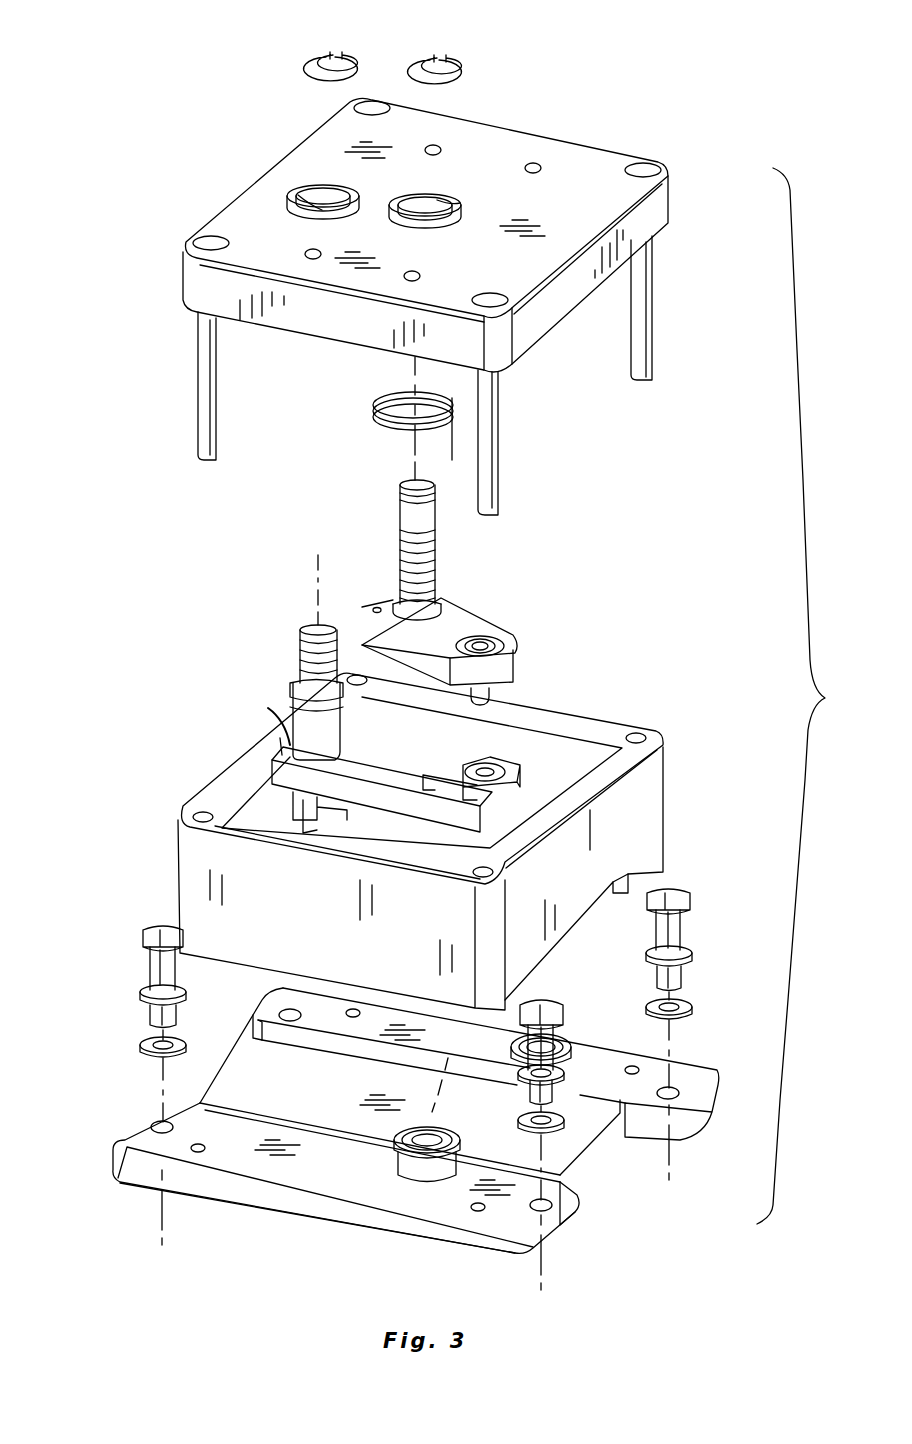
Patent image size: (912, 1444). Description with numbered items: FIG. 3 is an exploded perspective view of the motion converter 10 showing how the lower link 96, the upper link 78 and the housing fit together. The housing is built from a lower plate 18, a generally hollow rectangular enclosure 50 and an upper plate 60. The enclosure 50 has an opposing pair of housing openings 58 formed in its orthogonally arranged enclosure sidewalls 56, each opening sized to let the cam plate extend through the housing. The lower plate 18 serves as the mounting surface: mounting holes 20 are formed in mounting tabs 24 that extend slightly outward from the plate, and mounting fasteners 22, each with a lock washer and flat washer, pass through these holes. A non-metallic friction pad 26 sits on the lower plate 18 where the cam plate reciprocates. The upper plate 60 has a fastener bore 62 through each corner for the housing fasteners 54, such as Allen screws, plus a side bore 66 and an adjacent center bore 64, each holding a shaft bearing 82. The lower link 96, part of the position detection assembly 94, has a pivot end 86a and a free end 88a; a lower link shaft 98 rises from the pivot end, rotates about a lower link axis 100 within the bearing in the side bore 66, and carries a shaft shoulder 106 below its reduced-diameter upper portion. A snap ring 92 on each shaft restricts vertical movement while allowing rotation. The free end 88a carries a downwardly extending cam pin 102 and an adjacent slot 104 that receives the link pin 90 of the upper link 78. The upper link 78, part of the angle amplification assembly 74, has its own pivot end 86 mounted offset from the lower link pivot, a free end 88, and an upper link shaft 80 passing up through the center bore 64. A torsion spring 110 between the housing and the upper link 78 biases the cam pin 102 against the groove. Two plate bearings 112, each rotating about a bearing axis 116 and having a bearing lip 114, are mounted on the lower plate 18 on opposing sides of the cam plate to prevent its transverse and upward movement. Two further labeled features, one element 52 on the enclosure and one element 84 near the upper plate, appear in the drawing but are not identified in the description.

The motion converter 10 is at (808, 696).
The lower plate 18 is at (720, 1075).
The mounting holes 20 is at (290, 1010).
The mounting fasteners 22 is at (140, 932).
The mounting tabs 24 is at (135, 1140).
The friction pad 26 is at (319, 1088).
The hollow enclosure 50 is at (668, 787).
The housing holes 52 is at (637, 732).
The housing fasteners 54 is at (196, 440).
The enclosure sidewalls 56 is at (414, 815).
The housing openings 58 is at (575, 930).
The upper plate 60 is at (673, 196).
The fastener bore 62 is at (368, 100).
The center bore 64 is at (440, 200).
The side bore 66 is at (313, 190).
The angle amplification assembly 74 is at (380, 606).
The upper link 78 is at (500, 610).
The upper link shaft 80 is at (400, 512).
The shaft bearing 82 is at (300, 197).
The axis 84 is at (410, 378).
The pivot end 86 is at (440, 590).
The pivot end 86a is at (259, 714).
The free end 88 is at (520, 650).
The free end 88a is at (505, 770).
The link pin 90 is at (492, 695).
The snap ring 92 is at (312, 56).
The position detection assembly 94 is at (300, 742).
The lower link 96 is at (382, 789).
The lower link shaft 98 is at (298, 630).
The lower link axis 100 is at (312, 560).
The cam pin 102 is at (480, 838).
The slot 104 is at (520, 790).
The shaft shoulder 106 is at (303, 745).
The spring 110 is at (380, 425).
The plate bearings 112 is at (565, 1070).
The bearing lip 114 is at (565, 1040).
The bearing axis 116 is at (447, 1073).